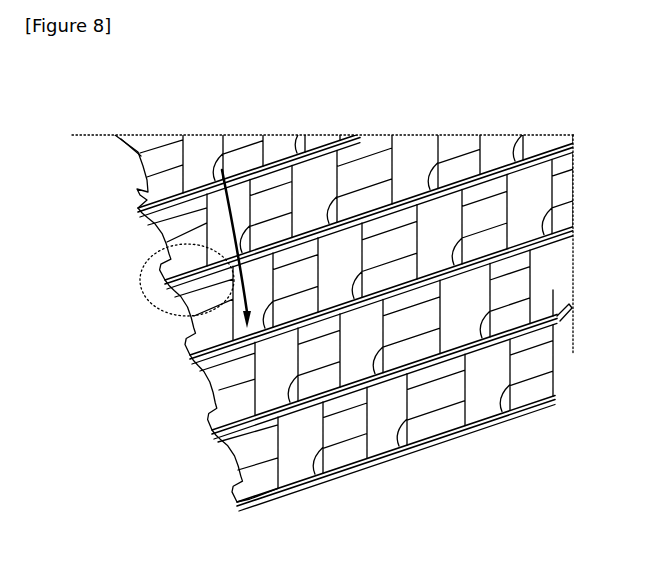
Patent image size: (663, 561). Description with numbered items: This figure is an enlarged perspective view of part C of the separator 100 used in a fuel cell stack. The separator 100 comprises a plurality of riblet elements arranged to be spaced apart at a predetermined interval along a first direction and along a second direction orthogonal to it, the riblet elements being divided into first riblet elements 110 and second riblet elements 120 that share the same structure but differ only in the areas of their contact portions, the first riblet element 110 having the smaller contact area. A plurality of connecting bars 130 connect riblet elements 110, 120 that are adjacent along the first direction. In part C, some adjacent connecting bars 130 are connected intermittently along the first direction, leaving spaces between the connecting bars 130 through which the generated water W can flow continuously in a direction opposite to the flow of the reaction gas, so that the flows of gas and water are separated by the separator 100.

The separator 100 is at (80, 66).
The first riblet element 110 is at (224, 468).
The second riblet element 120 is at (398, 410).
The connecting bar 130 is at (293, 487).
The generated water W is at (222, 170).
The part C is at (147, 255).